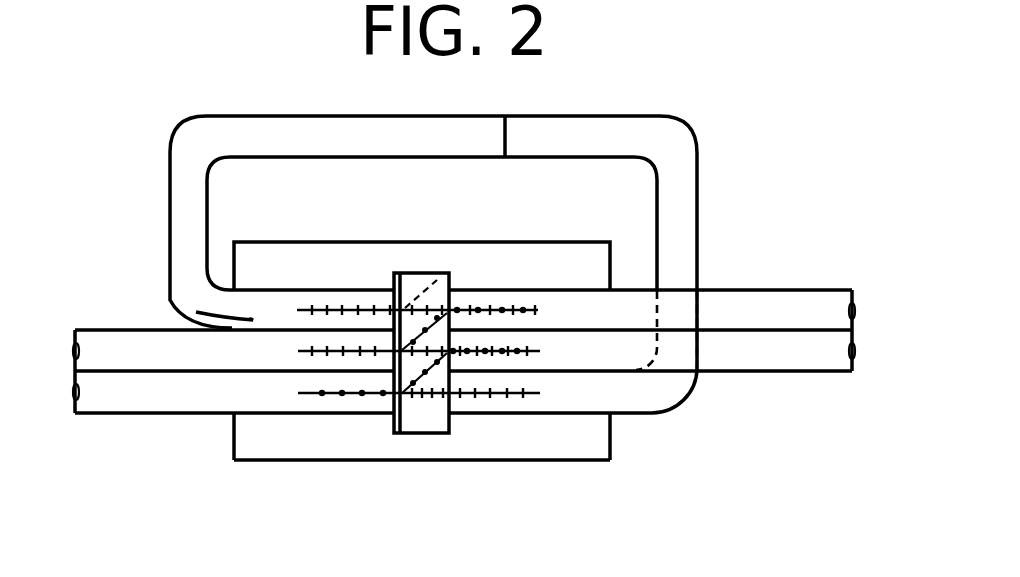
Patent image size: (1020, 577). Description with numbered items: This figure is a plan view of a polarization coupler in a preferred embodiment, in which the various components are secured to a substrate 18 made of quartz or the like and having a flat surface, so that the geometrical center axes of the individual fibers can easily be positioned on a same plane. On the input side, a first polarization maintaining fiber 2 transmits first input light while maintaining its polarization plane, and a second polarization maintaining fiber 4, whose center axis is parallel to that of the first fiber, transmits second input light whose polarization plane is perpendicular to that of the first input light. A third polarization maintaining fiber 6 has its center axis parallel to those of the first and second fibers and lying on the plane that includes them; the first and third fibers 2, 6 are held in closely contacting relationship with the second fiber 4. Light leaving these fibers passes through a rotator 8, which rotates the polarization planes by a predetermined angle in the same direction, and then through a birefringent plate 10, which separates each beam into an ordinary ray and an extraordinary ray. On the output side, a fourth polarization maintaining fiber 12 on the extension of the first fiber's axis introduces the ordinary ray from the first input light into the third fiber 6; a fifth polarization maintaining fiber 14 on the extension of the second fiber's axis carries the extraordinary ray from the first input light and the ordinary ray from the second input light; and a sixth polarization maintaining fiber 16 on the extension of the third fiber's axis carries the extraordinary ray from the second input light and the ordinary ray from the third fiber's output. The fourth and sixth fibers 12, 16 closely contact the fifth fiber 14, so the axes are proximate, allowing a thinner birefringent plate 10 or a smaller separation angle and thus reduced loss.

The first polarization maintaining fiber 2 is at (262, 407).
The second polarization maintaining fiber 4 is at (197, 363).
The third polarization maintaining fiber 6 is at (217, 327).
The rotator 8 is at (392, 420).
The birefringent plate 10 is at (425, 433).
The fourth polarization maintaining fiber 12 is at (580, 405).
The fifth polarization maintaining fiber 14 is at (613, 360).
The sixth polarization maintaining fiber 16 is at (628, 320).
The substrate 18 is at (567, 460).